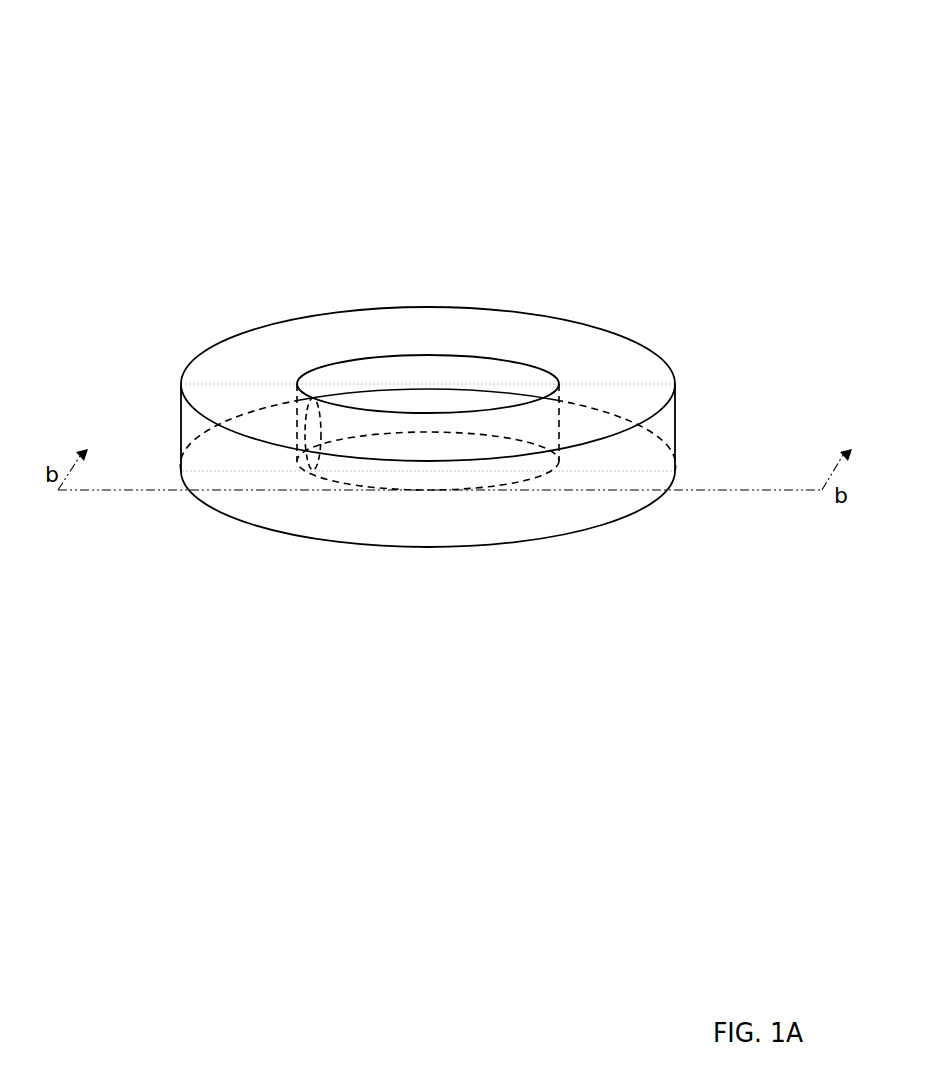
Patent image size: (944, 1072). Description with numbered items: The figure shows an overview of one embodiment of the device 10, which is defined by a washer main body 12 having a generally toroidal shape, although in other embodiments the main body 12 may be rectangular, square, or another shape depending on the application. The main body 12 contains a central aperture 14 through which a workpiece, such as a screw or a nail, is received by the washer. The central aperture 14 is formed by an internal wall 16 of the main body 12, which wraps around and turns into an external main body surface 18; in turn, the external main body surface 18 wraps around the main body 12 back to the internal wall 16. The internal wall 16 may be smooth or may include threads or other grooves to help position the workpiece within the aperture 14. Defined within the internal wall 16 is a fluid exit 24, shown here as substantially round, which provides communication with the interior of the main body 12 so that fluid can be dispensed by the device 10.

The device 10 is at (158, 120).
The washer main body 12 is at (603, 347).
The central aperture 14 is at (396, 465).
The internal wall 16 is at (437, 363).
The external main body surface 18 is at (620, 481).
The fluid exit 24 is at (307, 428).